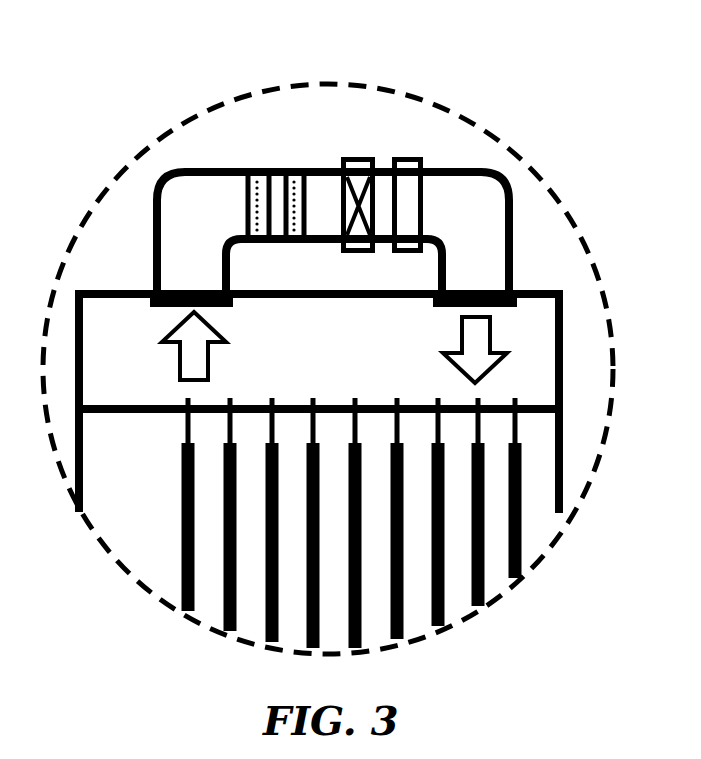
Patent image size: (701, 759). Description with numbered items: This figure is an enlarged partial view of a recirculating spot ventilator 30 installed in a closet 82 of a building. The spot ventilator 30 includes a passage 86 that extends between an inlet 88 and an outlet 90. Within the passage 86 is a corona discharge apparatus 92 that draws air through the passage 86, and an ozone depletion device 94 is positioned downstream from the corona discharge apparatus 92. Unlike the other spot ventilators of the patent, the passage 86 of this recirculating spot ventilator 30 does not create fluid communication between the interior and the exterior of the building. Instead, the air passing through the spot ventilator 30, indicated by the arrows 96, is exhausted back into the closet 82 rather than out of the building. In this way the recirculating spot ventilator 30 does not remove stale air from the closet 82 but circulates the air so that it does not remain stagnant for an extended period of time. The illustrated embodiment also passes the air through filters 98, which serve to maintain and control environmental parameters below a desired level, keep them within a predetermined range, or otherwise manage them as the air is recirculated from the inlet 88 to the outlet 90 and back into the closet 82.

The spot ventilator 30 is at (222, 142).
The closet 82 is at (358, 381).
The passage 86 is at (177, 214).
The inlet 88 is at (219, 307).
The outlet 90 is at (444, 307).
The corona discharge apparatus 92 is at (276, 169).
The ozone depletion device 94 is at (356, 157).
The arrows 96 is at (182, 371).
The filters 98 is at (409, 157).